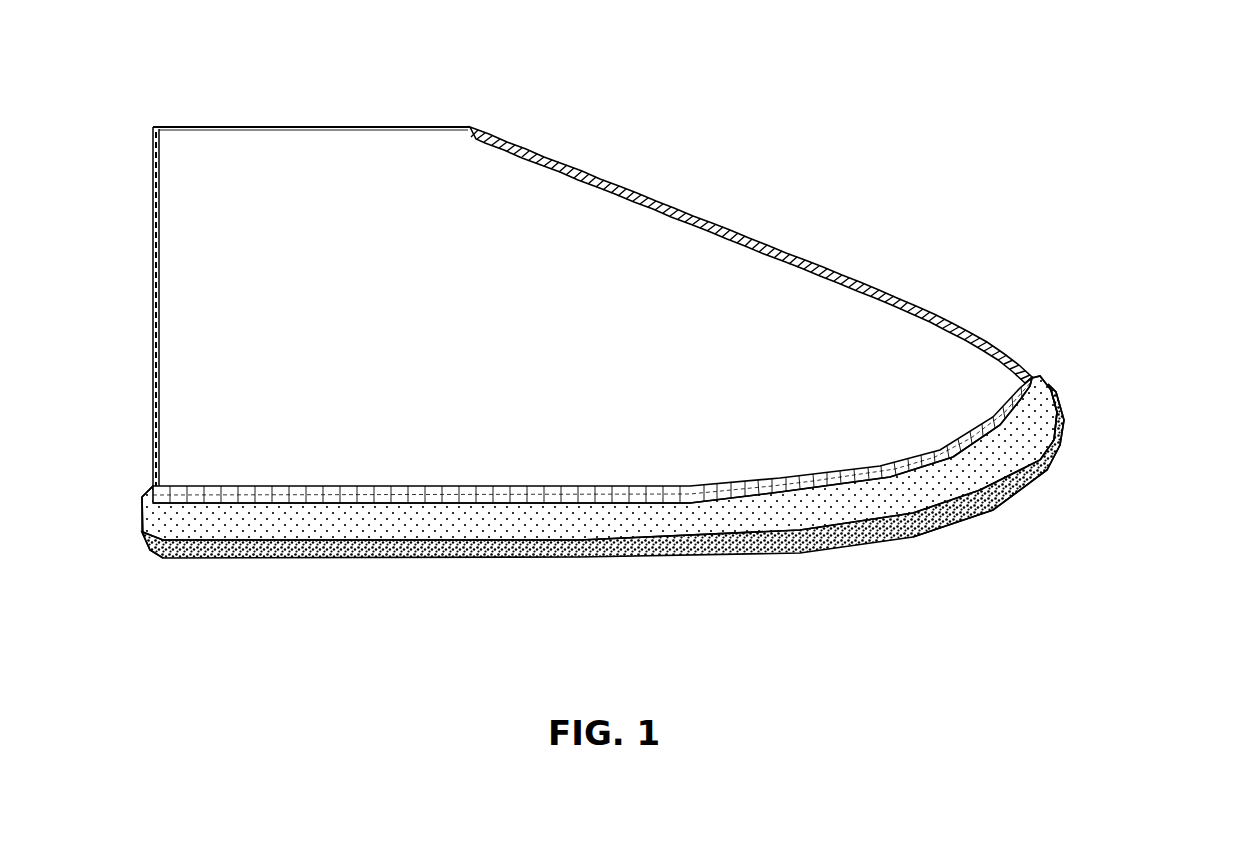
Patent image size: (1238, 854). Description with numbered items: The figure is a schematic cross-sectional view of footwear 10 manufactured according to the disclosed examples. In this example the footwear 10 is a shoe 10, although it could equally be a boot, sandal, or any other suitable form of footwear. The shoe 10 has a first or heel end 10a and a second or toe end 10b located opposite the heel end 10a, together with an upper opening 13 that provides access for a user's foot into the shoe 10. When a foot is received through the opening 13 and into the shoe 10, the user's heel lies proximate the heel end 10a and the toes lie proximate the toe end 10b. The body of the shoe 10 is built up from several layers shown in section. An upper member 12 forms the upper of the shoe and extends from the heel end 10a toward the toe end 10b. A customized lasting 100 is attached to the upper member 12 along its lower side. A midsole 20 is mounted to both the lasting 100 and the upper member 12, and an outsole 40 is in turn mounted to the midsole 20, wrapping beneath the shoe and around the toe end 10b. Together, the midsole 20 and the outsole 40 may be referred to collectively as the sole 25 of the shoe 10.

The footwear 10 is at (838, 83).
The heel end 10a is at (112, 512).
The toe end 10b is at (1096, 387).
The upper member 12 is at (571, 159).
The upper opening 13 is at (262, 111).
The midsole 20 is at (1043, 372).
The sole 25 is at (177, 583).
The outsole 40 is at (1033, 480).
The customized lasting 100 is at (680, 485).